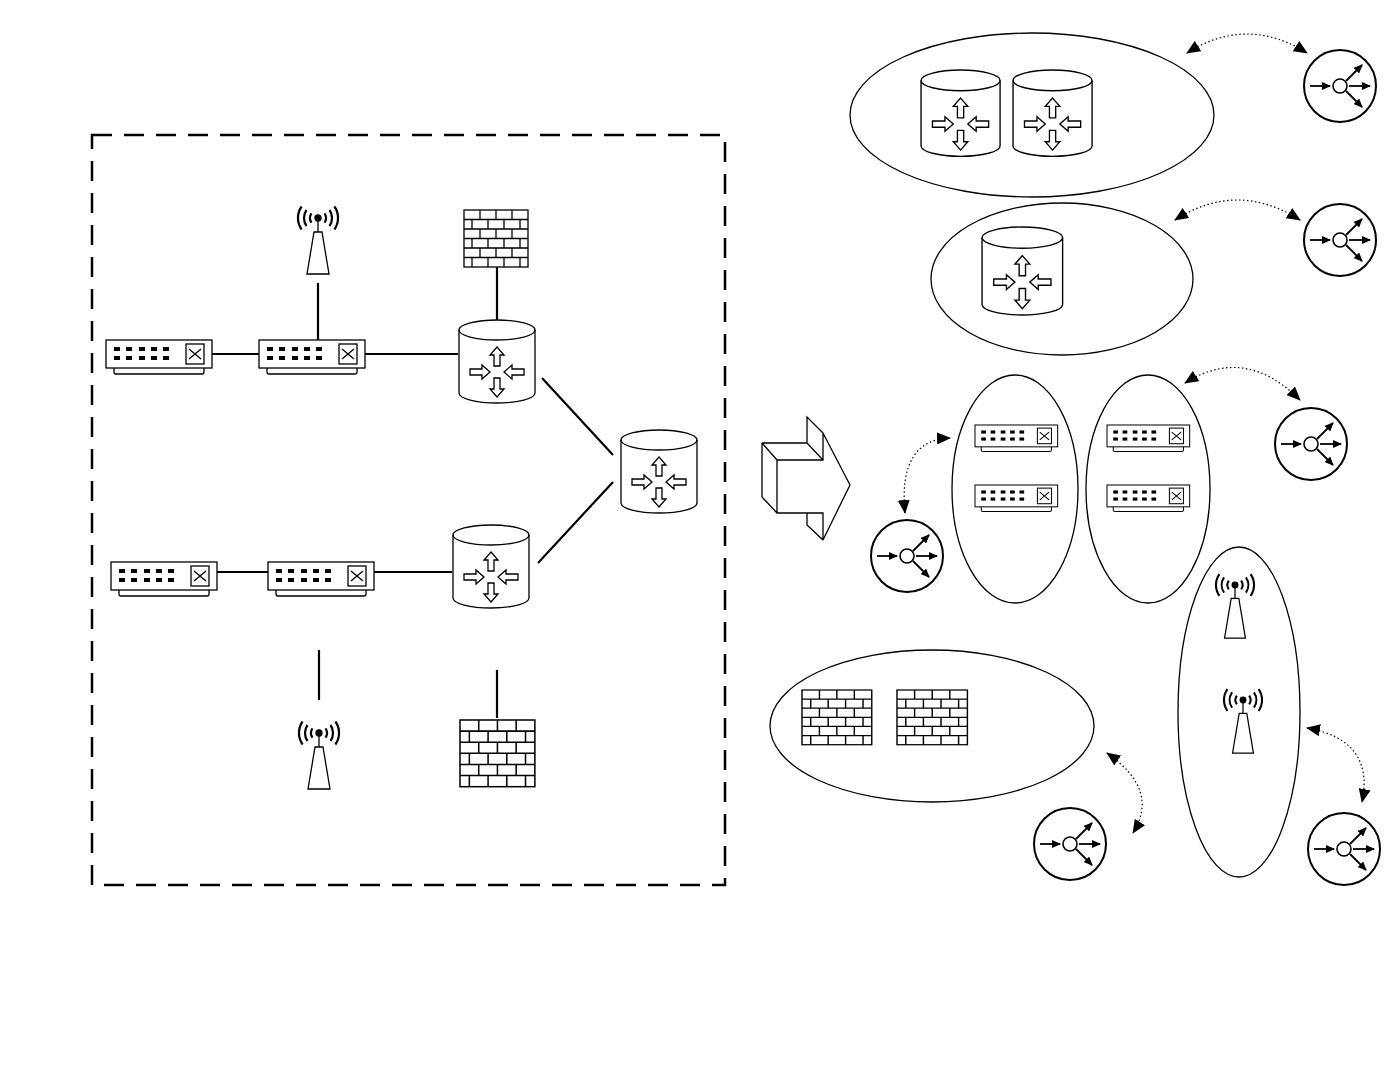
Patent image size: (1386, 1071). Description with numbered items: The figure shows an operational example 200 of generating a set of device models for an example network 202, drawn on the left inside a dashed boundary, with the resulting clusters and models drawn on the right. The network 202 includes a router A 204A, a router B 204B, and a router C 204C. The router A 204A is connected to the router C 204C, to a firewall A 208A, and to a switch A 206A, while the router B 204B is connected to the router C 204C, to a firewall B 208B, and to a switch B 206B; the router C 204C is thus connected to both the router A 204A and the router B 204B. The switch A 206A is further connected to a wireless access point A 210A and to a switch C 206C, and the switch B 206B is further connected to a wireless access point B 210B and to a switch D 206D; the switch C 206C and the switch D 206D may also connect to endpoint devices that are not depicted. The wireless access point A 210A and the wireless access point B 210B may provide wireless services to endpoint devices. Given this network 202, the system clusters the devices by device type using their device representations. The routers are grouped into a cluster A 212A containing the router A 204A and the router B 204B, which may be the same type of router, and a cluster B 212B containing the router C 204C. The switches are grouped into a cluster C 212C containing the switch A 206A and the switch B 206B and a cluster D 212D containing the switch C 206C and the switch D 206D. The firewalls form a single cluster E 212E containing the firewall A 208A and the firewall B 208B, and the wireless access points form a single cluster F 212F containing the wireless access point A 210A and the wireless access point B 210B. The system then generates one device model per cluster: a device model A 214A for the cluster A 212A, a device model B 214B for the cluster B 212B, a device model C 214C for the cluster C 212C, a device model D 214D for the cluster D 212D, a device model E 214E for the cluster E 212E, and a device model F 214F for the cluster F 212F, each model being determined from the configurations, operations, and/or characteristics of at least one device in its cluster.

The operational example 200 is at (172, 88).
The network 202 is at (408, 510).
The router A 204A is at (497, 390).
The router B 204B is at (491, 593).
The router C 204C is at (659, 498).
The switch A 206A is at (312, 382).
The switch B 206B is at (321, 604).
The switch C 206C is at (159, 382).
The switch D 206D is at (164, 604).
The firewall A 208A is at (495, 214).
The firewall B 208B is at (496, 778).
The wireless access point A 210A is at (318, 213).
The wireless access point B 210B is at (329, 787).
The cluster A 212A is at (1032, 115).
The cluster B 212B is at (1062, 279).
The cluster C 212C is at (1015, 489).
The cluster D 212D is at (1148, 489).
The cluster E 212E is at (932, 726).
The cluster F 212F is at (1239, 712).
The device model A 214A is at (1340, 108).
The device model B 214B is at (1340, 262).
The device model C 214C is at (907, 579).
The device model D 214D is at (1311, 467).
The device model E 214E is at (1070, 867).
The device model F 214F is at (1344, 872).